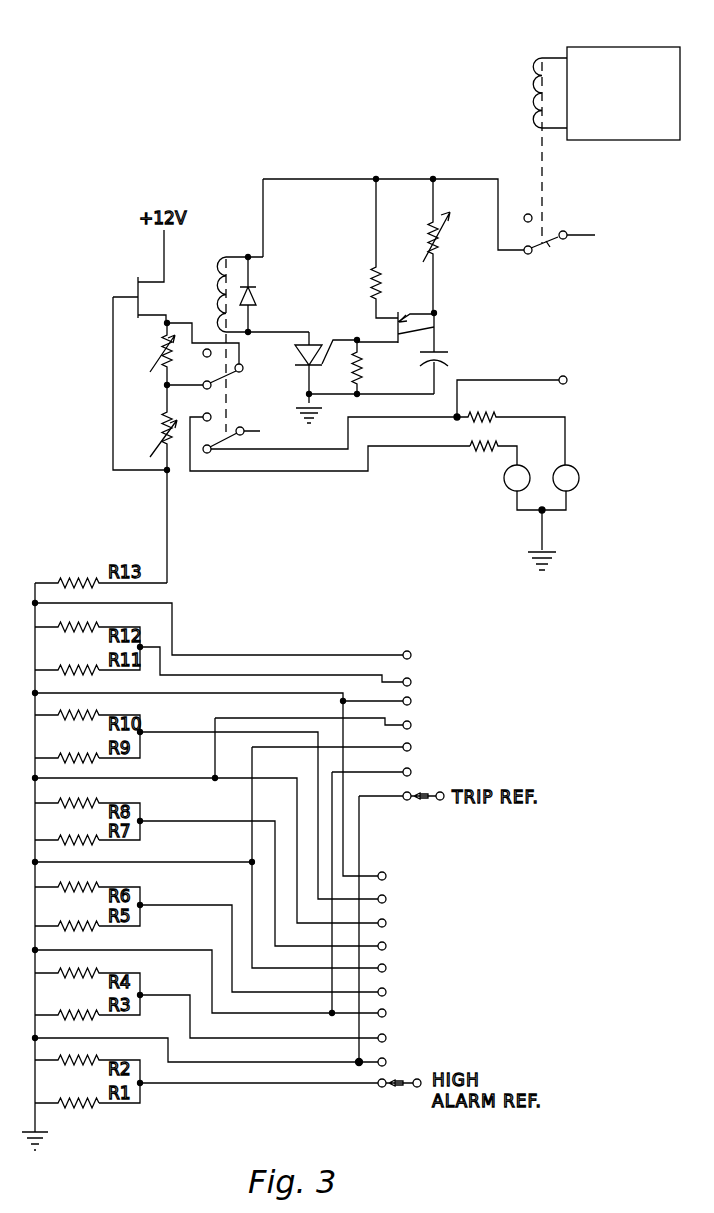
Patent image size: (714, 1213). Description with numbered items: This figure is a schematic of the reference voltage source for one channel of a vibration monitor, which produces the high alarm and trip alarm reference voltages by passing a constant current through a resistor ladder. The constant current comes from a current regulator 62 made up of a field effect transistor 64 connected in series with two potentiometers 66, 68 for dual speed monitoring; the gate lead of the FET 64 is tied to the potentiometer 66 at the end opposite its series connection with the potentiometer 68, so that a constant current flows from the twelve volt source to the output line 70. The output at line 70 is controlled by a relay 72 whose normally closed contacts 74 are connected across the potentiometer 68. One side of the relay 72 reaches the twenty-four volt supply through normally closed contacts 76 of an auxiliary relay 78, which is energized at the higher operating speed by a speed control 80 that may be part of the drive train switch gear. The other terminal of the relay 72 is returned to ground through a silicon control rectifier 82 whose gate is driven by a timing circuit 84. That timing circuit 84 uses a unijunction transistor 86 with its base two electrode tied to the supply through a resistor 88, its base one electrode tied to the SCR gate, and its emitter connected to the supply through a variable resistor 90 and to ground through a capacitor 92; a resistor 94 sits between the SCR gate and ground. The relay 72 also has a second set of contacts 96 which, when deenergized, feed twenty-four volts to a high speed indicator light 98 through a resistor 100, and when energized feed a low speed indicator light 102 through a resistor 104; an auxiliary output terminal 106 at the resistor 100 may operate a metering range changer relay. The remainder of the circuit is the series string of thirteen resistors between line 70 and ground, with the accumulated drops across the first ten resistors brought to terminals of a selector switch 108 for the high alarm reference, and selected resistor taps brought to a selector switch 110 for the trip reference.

The current regulator 62 is at (149, 347).
The field effect transistor 64 is at (150, 278).
The potentiometer 66 is at (160, 432).
The potentiometer 68 is at (160, 371).
The output line of the regulator 70 is at (172, 514).
The relay 72 is at (217, 259).
The normally closed contacts 74 is at (240, 372).
The normally closed contacts 76 is at (552, 244).
The auxiliary relay 78 is at (530, 89).
The speed control 80 is at (618, 50).
The silicon control rectifier 82 is at (296, 350).
The timing circuit 84 is at (420, 286).
The unijunction transistor 86 is at (437, 328).
The resistor 88 is at (366, 282).
The variable resistor 90 is at (445, 233).
The capacitor 92 is at (448, 360).
The resistor 94 is at (365, 372).
The second set of contacts 96 is at (226, 437).
The high speed indicator light 98 is at (579, 484).
The resistor 100 is at (505, 405).
The low speed indicator light 102 is at (504, 484).
The resistor 104 is at (468, 452).
The auxiliary output terminal 106 is at (566, 376).
The selector switch 108 is at (459, 953).
The selector switch 110 is at (473, 732).